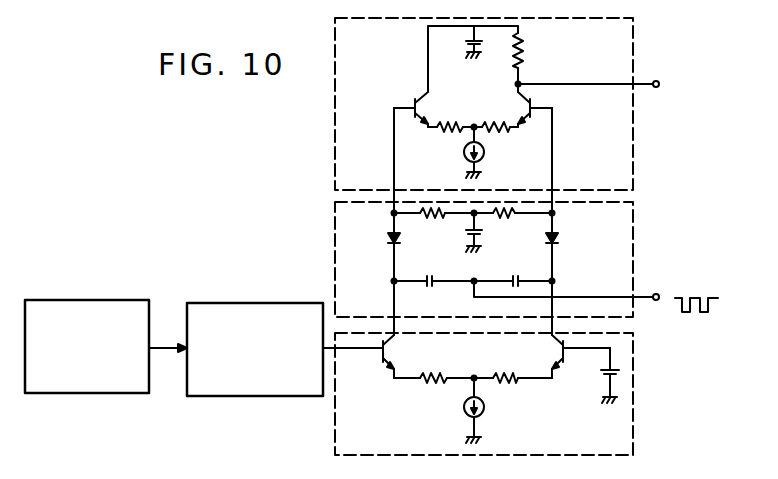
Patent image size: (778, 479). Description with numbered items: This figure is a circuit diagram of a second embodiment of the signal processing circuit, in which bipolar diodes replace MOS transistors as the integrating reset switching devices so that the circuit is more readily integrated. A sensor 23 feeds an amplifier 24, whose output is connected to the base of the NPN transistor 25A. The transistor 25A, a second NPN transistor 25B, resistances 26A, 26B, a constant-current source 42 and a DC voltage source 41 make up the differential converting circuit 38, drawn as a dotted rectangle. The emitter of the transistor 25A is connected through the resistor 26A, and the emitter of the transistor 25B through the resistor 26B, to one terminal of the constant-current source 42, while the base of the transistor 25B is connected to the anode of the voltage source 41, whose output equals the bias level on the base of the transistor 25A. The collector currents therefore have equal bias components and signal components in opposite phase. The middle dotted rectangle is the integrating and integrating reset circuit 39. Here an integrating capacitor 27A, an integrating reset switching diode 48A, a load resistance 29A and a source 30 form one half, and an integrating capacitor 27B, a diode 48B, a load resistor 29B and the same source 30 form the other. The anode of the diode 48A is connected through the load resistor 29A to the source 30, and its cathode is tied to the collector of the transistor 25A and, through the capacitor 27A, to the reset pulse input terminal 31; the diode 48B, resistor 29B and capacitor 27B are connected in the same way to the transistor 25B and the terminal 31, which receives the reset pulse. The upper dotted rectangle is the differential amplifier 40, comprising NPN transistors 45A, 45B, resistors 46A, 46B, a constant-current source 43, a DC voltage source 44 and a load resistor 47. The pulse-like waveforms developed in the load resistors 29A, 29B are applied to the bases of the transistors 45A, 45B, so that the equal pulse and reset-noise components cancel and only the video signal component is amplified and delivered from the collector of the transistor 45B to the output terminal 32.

The sensor 23 is at (116, 300).
The amplifier 24 is at (264, 303).
The NPN transistor 25A is at (388, 350).
The NPN transistor 25B is at (556, 351).
The resistance 26A is at (436, 382).
The resistance 26B is at (503, 382).
The integrating capacitor 27A is at (428, 287).
The integrating capacitor 27B is at (522, 274).
The load resistance 29A is at (432, 216).
The load resistor 29B is at (510, 217).
The constant-current source 30 is at (481, 231).
The reset pulse input terminal 31 is at (657, 294).
The output terminal 32 is at (656, 80).
The differential converting circuit 38 is at (633, 408).
The integrating and integrating reset circuit 39 is at (633, 258).
The differential amplifier 40 is at (633, 170).
The DC voltage source 41 is at (600, 372).
The constant-current source 42 is at (483, 414).
The constant-current source 43 is at (483, 158).
The DC voltage source 44 is at (462, 44).
The NPN transistor 45A is at (431, 100).
The NPN transistor 45B is at (524, 111).
The resistor 46A is at (456, 129).
The resistor 46B is at (496, 129).
The load resistor 47 is at (525, 48).
The integrating reset switching diode 48A is at (388, 237).
The integrating reset switching diode 48B is at (562, 243).